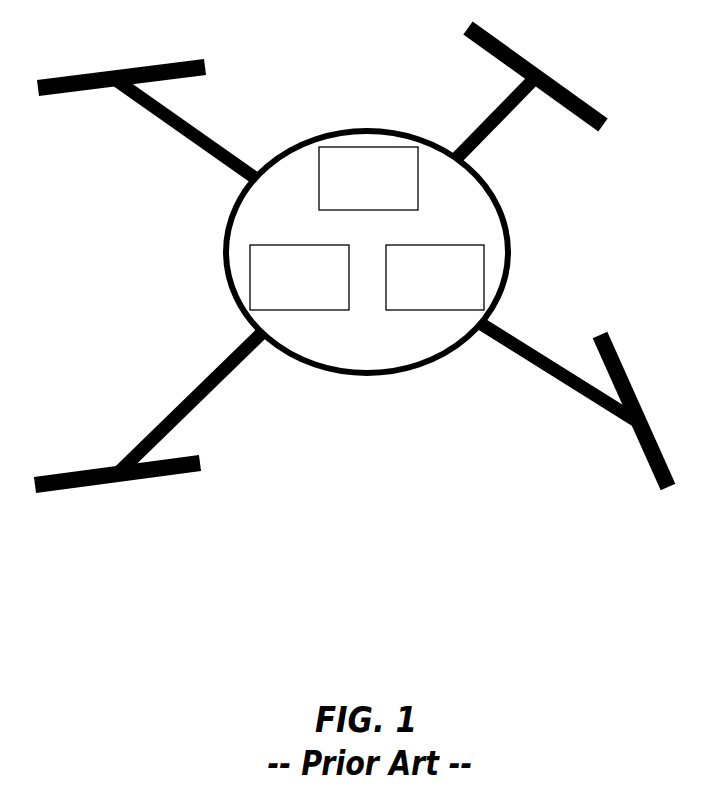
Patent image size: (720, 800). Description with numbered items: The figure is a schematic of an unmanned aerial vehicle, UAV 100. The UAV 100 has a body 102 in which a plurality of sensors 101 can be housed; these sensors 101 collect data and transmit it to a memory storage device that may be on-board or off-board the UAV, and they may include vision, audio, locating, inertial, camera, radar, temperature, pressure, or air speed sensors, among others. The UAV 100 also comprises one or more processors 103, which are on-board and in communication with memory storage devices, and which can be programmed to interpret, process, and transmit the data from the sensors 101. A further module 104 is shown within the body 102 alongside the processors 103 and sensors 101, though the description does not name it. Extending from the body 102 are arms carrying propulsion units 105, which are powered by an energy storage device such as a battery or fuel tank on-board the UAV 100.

The UAV 100 is at (348, 257).
The sensors 101 is at (368, 178).
The body 102 is at (350, 126).
The processors 103 is at (299, 277).
The communication module 104 is at (435, 277).
The propulsion units 105 is at (598, 330).